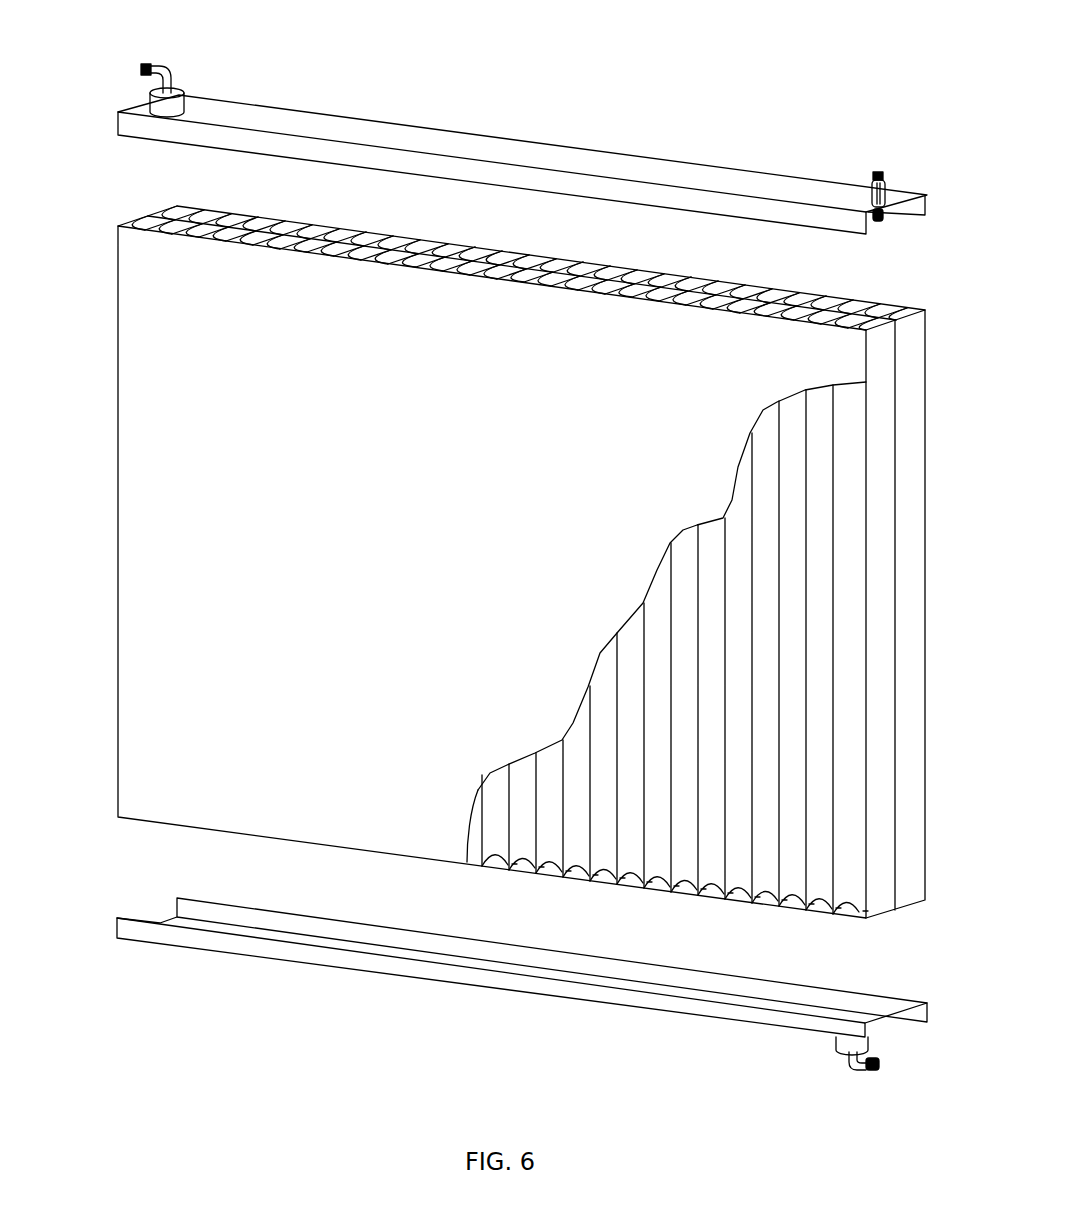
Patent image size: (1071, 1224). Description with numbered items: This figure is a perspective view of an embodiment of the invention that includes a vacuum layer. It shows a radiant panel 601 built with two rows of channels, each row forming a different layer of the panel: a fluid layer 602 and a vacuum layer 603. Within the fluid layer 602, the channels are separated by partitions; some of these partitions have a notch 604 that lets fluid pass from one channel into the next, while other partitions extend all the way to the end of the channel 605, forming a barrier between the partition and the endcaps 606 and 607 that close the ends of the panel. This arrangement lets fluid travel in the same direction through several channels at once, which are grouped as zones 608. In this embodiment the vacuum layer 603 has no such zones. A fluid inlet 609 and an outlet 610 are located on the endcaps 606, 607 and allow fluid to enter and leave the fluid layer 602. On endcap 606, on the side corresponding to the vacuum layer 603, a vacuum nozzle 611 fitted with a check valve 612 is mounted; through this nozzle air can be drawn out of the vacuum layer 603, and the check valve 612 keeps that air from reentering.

The radiant panel 601 is at (153, 307).
The fluid layer 602 is at (137, 218).
The vacuum layer 603 is at (167, 208).
The notch 604 is at (397, 263).
The channel 605 is at (705, 905).
The endcap 606 is at (613, 167).
The endcap 607 is at (440, 978).
The zones 608 is at (778, 317).
The fluid inlet 609 is at (172, 67).
The outlet 610 is at (840, 1060).
The vacuum nozzle 611 is at (872, 172).
The check valve 612 is at (890, 183).